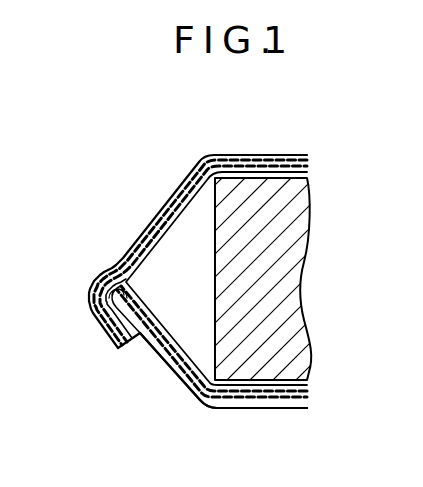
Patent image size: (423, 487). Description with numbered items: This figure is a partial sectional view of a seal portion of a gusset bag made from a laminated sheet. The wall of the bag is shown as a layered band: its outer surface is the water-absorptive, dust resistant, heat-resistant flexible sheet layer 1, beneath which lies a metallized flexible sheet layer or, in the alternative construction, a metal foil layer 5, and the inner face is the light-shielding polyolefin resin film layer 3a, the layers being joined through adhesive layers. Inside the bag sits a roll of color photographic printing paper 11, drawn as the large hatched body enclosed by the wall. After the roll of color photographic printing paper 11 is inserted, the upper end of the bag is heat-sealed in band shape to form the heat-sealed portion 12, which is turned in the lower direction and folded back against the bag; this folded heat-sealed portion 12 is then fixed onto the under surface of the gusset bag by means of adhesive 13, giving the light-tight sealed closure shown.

The water-absorptive, dust resistant heat-resistant flexible sheet layer 1 is at (238, 154).
The metal foil layer 5 is at (268, 154).
The light-shielding polyolefin resin film layer 3a is at (307, 173).
The roll of color photographic printing paper 11 is at (293, 309).
The heat-sealed portion 12 is at (95, 316).
The adhesive 13 is at (143, 336).